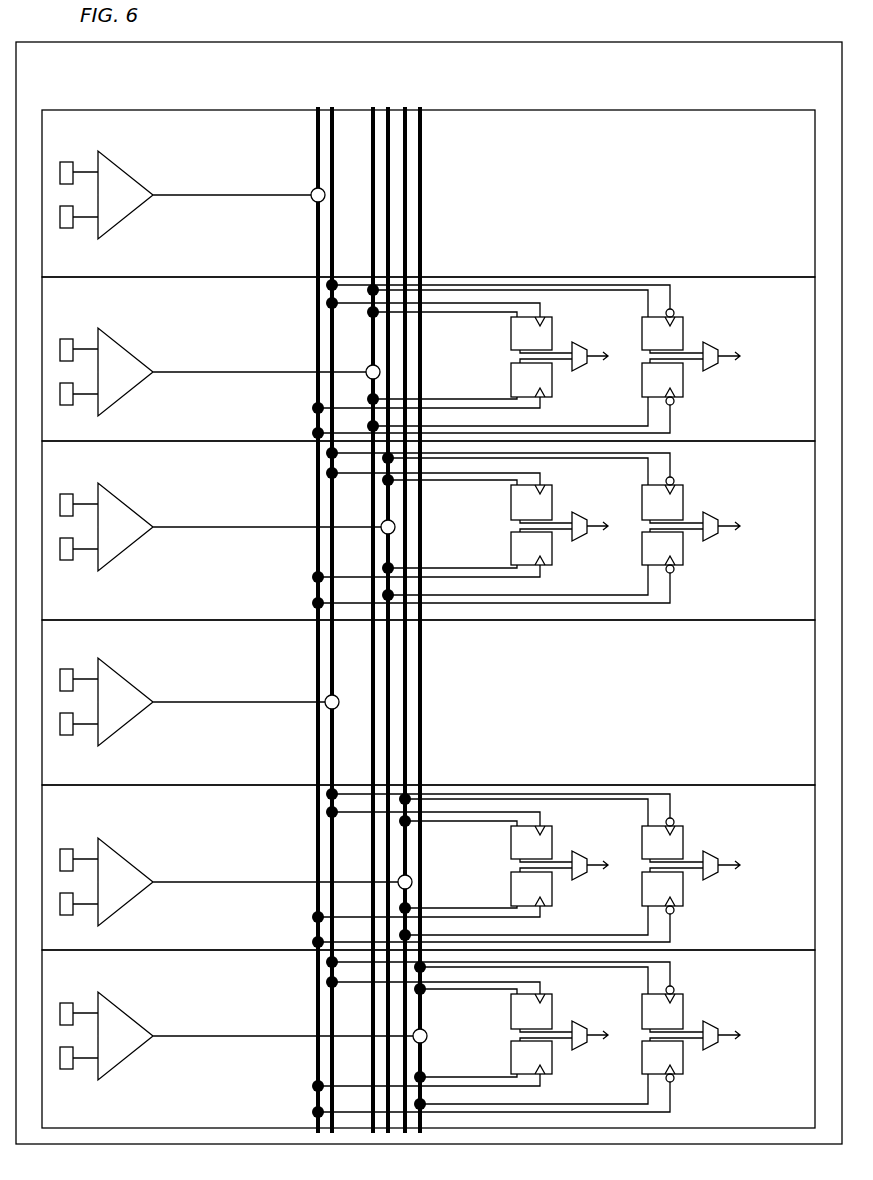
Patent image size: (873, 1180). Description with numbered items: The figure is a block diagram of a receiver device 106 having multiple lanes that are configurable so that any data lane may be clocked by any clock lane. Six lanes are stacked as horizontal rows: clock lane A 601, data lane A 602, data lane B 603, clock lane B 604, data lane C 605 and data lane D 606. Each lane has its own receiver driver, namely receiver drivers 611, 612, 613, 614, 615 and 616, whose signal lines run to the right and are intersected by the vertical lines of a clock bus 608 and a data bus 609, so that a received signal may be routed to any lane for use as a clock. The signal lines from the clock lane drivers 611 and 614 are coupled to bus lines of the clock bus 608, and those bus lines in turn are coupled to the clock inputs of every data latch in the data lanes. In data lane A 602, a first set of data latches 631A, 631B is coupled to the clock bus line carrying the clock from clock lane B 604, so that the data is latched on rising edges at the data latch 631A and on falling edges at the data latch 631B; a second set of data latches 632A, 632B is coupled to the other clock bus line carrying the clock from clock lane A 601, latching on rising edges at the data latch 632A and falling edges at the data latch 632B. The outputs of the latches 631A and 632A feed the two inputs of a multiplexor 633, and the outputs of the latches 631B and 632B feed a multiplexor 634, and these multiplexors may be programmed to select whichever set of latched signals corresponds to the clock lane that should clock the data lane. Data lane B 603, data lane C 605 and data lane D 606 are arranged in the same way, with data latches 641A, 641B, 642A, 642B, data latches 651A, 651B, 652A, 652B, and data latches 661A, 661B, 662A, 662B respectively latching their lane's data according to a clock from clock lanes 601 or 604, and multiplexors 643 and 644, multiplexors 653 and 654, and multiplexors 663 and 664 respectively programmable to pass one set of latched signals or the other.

The receiver device 106 is at (805, 76).
The clock lane A 601 is at (217, 136).
The data lane A 602 is at (202, 301).
The data lane B 603 is at (203, 465).
The clock lane B 604 is at (215, 643).
The data lane C 605 is at (203, 808).
The data lane D 606 is at (203, 975).
The clock bus 608 is at (310, 106).
The data bus 609 is at (385, 101).
The receiver driver 611 is at (130, 207).
The receiver driver 612 is at (118, 386).
The receiver driver 613 is at (134, 539).
The receiver driver 614 is at (144, 717).
The receiver driver 615 is at (118, 895).
The receiver driver 616 is at (134, 1048).
The data latch 631A is at (556, 333).
The data latch 632A is at (556, 381).
The data latch 631B is at (688, 333).
The data latch 632B is at (688, 384).
The multiplexor 633 is at (592, 349).
The multiplexor 634 is at (724, 353).
The data latch 641A is at (556, 503).
The data latch 642A is at (556, 549).
The data latch 641B is at (688, 503).
The data latch 642B is at (688, 552).
The multiplexor 643 is at (592, 519).
The multiplexor 644 is at (724, 523).
The data latch 651A is at (556, 842).
The data latch 652A is at (556, 890).
The data latch 651B is at (688, 842).
The data latch 652B is at (688, 893).
The multiplexor 653 is at (592, 858).
The multiplexor 654 is at (724, 862).
The data latch 661A is at (556, 1012).
The data latch 662A is at (556, 1058).
The data latch 661B is at (688, 1012).
The data latch 662B is at (688, 1061).
The multiplexor 663 is at (592, 1027).
The multiplexor 664 is at (724, 1031).